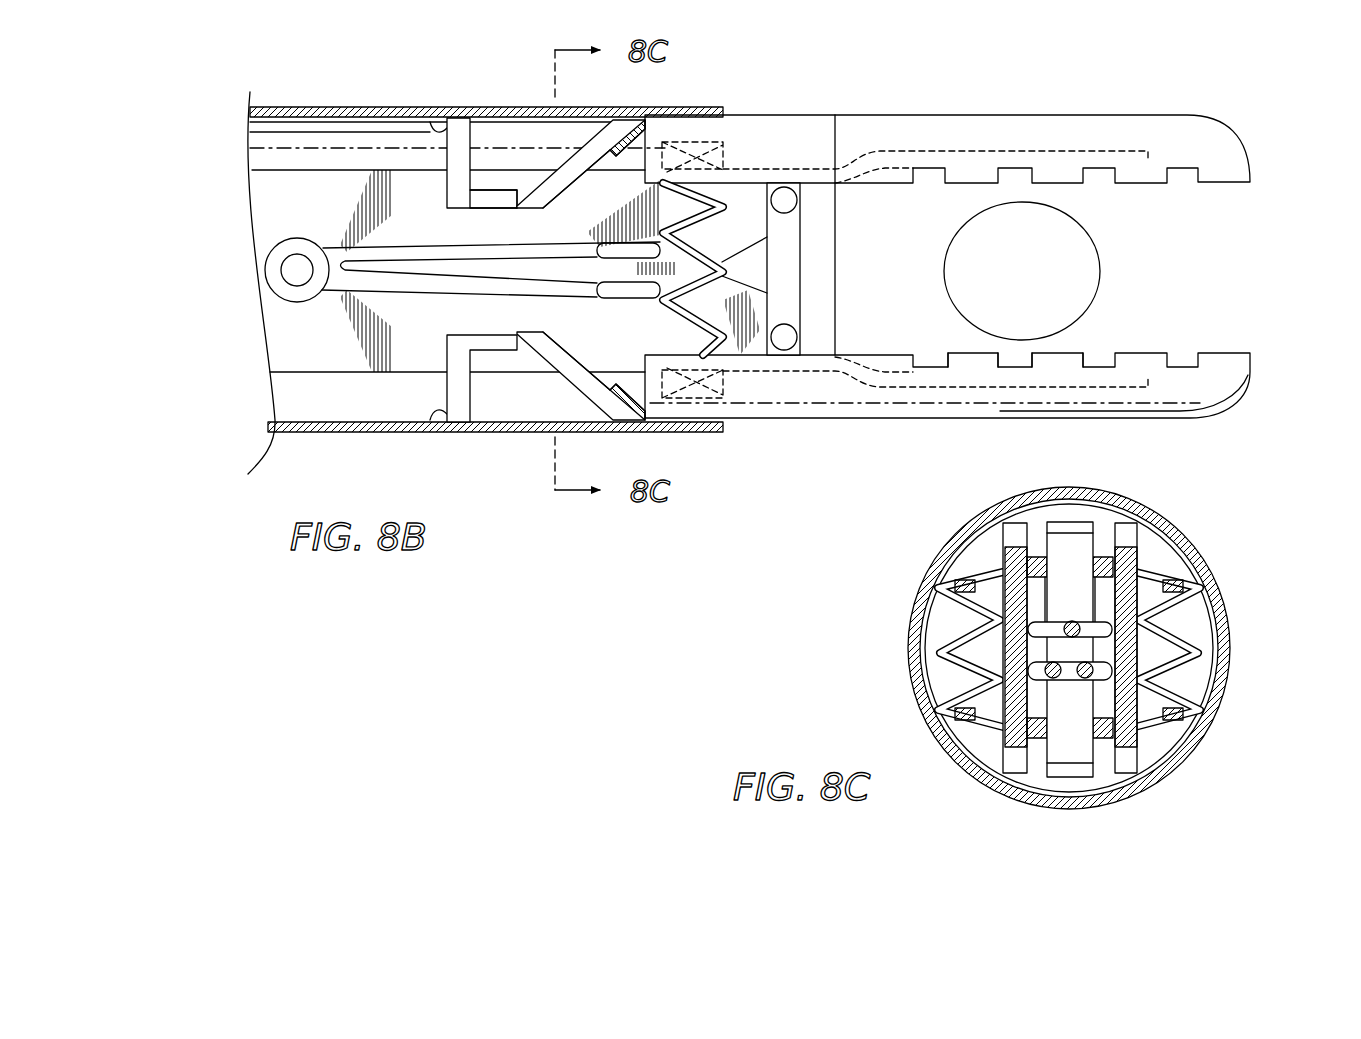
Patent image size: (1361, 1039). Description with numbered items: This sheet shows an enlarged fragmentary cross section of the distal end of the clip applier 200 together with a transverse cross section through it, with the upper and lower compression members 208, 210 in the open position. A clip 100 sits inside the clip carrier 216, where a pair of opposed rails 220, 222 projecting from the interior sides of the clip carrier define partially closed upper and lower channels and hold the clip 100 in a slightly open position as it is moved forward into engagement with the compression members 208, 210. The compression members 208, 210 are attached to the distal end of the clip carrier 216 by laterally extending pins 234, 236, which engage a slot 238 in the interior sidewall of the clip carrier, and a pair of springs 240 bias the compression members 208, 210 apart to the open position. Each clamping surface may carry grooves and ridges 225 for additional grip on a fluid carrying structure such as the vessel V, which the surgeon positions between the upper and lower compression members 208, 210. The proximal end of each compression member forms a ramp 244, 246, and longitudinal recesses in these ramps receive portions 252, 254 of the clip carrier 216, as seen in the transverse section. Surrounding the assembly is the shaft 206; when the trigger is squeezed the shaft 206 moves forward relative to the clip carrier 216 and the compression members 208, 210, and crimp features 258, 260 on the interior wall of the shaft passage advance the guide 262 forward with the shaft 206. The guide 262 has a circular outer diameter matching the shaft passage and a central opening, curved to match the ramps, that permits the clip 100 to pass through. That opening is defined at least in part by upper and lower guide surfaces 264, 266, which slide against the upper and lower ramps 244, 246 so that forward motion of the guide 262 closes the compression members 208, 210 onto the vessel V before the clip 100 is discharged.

In FIG. 8B, the clip 100 is at (388, 262).
In FIG. 8C, the clip 100 is at (1053, 622).
In FIG. 8B, the clip applier 200 is at (283, 62).
In FIG. 8C, the clip applier 200 is at (868, 657).
In FIG. 8B, the shaft 206 is at (317, 436).
In FIG. 8C, the shaft 206 is at (930, 590).
In FIG. 8B, the upper compression member 208 is at (1195, 125).
In FIG. 8B, the lower compression member 210 is at (1222, 400).
In FIG. 8B, the clip carrier 216 is at (835, 270).
In FIG. 8C, the clip carrier 216 is at (1135, 615).
In FIG. 8C, the rail 220 is at (1043, 680).
In FIG. 8C, the rail 222 is at (1105, 660).
In FIG. 8B, the grooves and ridges 225 is at (1185, 355).
In FIG. 8B, the pin 234 is at (783, 188).
In FIG. 8B, the pin 236 is at (783, 349).
In FIG. 8B, the slot 238 is at (835, 307).
In FIG. 8B, the spring 240 is at (708, 345).
In FIG. 8C, the spring 240 is at (1200, 648).
In FIG. 8B, the upper ramp 244 is at (570, 158).
In FIG. 8C, the upper ramp 244 is at (975, 553).
In FIG. 8B, the lower ramp 246 is at (547, 380).
In FIG. 8C, the lower ramp 246 is at (1185, 727).
In FIG. 8C, the portion of clip carrier 252 is at (1130, 562).
In FIG. 8C, the portion of clip carrier 254 is at (1135, 745).
In FIG. 8B, the crimp feature 258 is at (437, 125).
In FIG. 8B, the crimp feature 260 is at (432, 422).
In FIG. 8B, the guide 262 is at (458, 140).
In FIG. 8B, the upper guide surface 264 is at (490, 192).
In FIG. 8B, the lower guide surface 266 is at (483, 347).
In FIG. 8B, the vessel V is at (1100, 270).